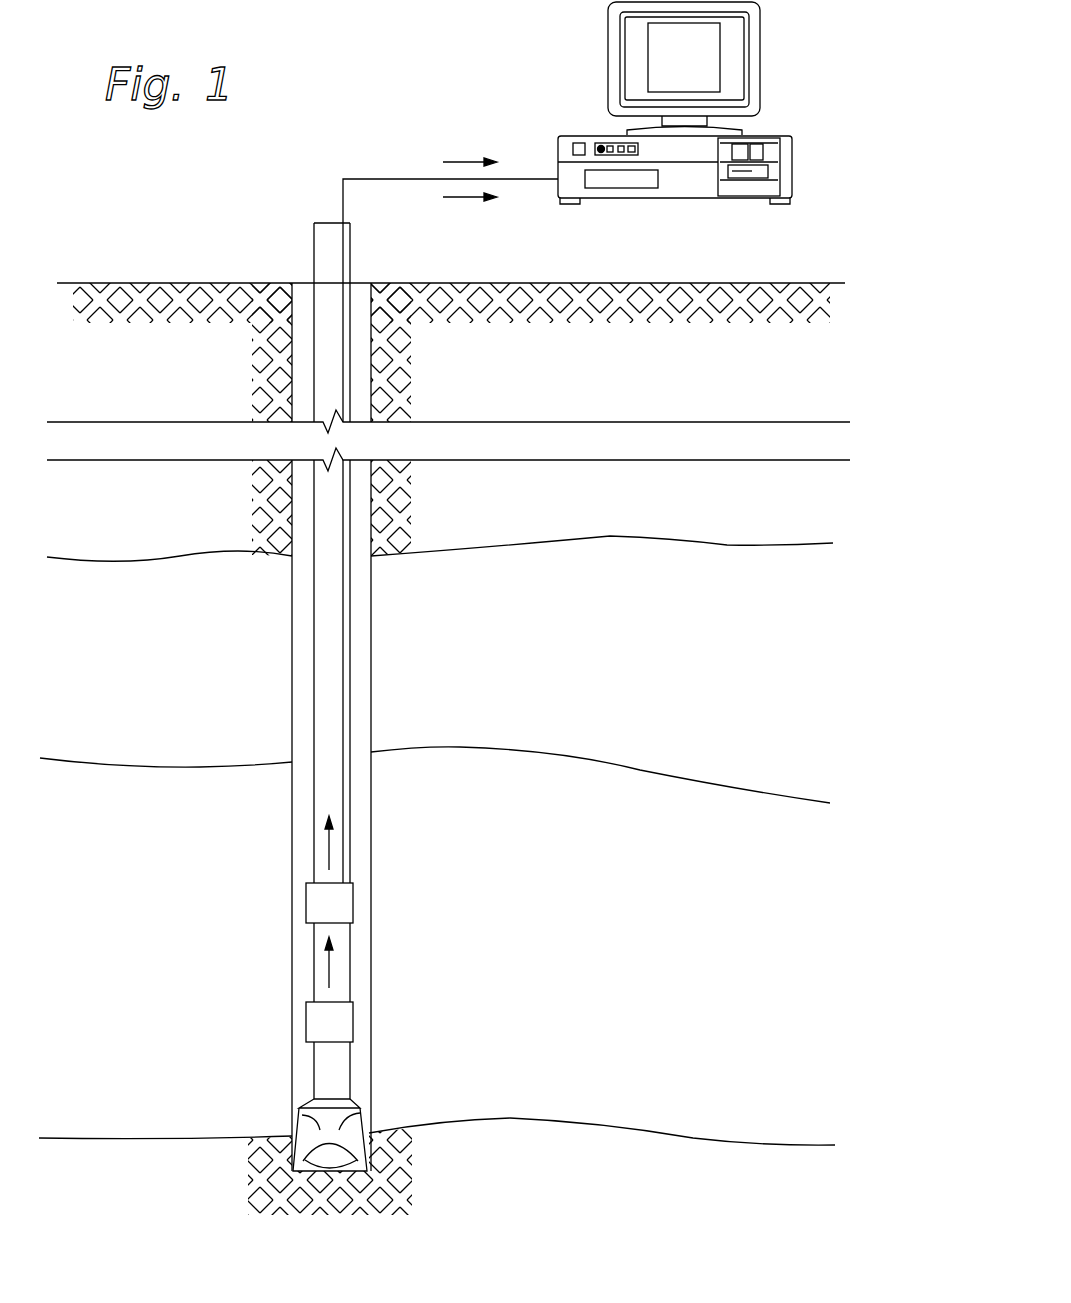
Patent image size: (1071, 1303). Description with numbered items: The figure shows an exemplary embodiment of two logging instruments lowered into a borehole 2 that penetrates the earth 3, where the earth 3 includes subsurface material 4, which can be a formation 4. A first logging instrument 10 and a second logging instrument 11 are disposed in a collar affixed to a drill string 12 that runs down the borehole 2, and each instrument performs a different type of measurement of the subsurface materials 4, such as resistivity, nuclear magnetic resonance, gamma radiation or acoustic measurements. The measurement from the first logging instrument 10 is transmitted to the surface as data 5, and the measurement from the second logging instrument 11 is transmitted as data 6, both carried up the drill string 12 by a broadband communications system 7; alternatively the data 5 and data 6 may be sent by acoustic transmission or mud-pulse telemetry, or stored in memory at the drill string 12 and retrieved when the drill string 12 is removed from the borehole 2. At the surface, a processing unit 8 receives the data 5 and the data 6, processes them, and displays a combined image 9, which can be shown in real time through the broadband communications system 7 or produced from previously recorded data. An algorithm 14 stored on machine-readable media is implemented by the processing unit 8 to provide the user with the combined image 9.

The borehole 2 is at (292, 617).
The earth 3 is at (543, 706).
The subsurface material 4 is at (543, 941).
The data 5 is at (460, 162).
The data 6 is at (462, 197).
The broadband communications system 7 is at (343, 676).
The processing unit 8 is at (580, 136).
The combined image 9 is at (648, 62).
The first logging instrument 10 is at (306, 1018).
The second logging instrument 11 is at (306, 901).
The drill string 12 is at (314, 718).
The algorithm 14 is at (620, 190).